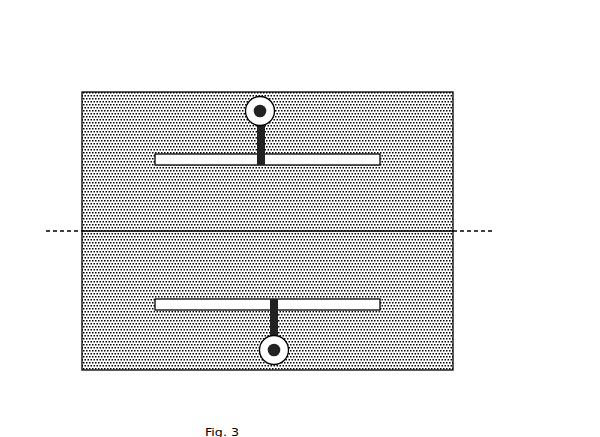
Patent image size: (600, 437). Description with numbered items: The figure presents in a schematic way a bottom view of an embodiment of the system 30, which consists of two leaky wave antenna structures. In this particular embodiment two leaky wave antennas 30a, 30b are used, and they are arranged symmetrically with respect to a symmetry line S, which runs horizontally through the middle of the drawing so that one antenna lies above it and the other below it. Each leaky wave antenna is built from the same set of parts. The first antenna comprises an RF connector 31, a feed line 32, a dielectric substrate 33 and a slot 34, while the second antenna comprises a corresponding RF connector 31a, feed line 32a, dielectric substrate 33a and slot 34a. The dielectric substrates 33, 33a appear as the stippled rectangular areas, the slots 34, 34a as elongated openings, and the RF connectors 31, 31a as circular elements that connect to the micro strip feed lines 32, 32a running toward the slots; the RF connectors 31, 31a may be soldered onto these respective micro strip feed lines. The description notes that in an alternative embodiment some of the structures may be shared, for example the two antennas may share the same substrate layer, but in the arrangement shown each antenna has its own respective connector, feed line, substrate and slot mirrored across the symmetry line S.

The system 30 is at (276, 209).
The leaky wave antenna 30a is at (294, 146).
The leaky wave antenna 30b is at (294, 314).
The RF connector 31 is at (262, 93).
The feed line 32 is at (258, 134).
The dielectric substrate 33 is at (328, 103).
The slot 34 is at (334, 152).
The RF connector 31a is at (255, 349).
The feed line 32a is at (263, 309).
The dielectric substrate 33a is at (292, 351).
The slot 34a is at (318, 298).
The symmetry line S is at (463, 223).